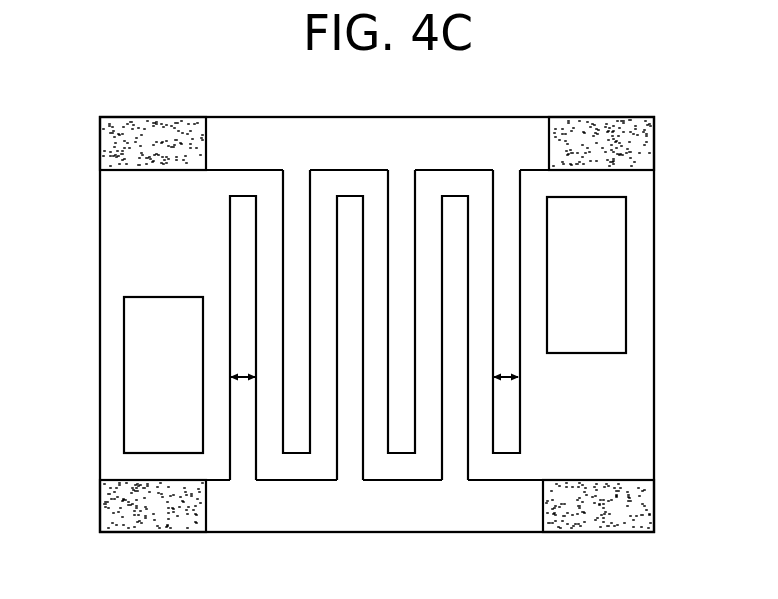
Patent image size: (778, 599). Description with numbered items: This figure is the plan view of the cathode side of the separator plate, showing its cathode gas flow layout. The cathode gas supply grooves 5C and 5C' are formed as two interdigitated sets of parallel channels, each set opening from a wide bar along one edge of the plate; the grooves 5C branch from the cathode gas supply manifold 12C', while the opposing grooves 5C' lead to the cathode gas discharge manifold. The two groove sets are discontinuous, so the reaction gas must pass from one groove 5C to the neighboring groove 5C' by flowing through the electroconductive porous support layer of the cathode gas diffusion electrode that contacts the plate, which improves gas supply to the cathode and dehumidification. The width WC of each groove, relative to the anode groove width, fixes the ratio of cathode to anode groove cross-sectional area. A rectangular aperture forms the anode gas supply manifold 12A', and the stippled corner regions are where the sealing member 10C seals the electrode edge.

The sealing member 10C is at (647, 151).
The cathode gas supply manifold 12C' is at (377, 391).
The cathode gas supply groove 5C' is at (401, 268).
The cathode gas supply groove 5C is at (349, 391).
The anode gas supply manifold 12A' is at (636, 275).
The cathode groove width WC is at (242, 378).